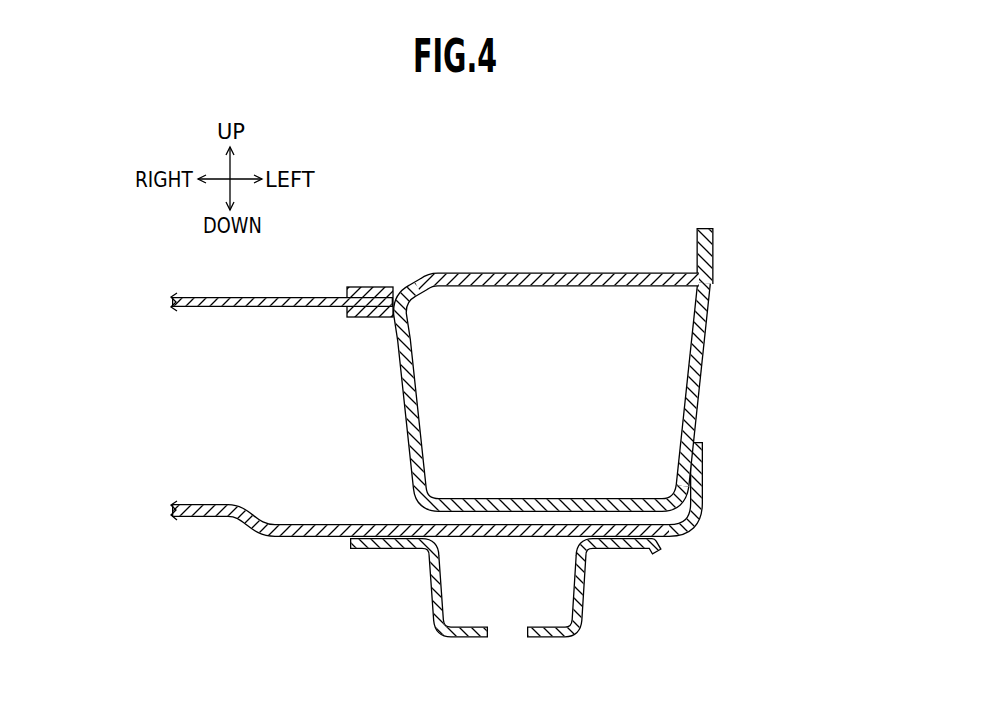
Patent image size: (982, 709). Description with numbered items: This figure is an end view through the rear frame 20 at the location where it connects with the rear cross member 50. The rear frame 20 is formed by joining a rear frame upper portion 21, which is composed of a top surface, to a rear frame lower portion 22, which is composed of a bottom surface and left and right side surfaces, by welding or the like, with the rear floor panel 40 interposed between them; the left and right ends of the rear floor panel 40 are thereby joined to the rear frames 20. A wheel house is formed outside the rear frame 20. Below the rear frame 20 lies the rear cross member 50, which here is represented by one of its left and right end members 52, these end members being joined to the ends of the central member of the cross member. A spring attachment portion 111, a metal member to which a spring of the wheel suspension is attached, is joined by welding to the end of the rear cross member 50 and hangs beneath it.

The rear frame 20 is at (618, 352).
The rear frame upper portion 21 is at (636, 272).
The rear frame lower portion 22 is at (734, 378).
The rear floor panel 40 is at (303, 296).
The rear cross member 50 is at (477, 503).
The end member 52 is at (689, 523).
The spring attachment portion 111 is at (582, 607).